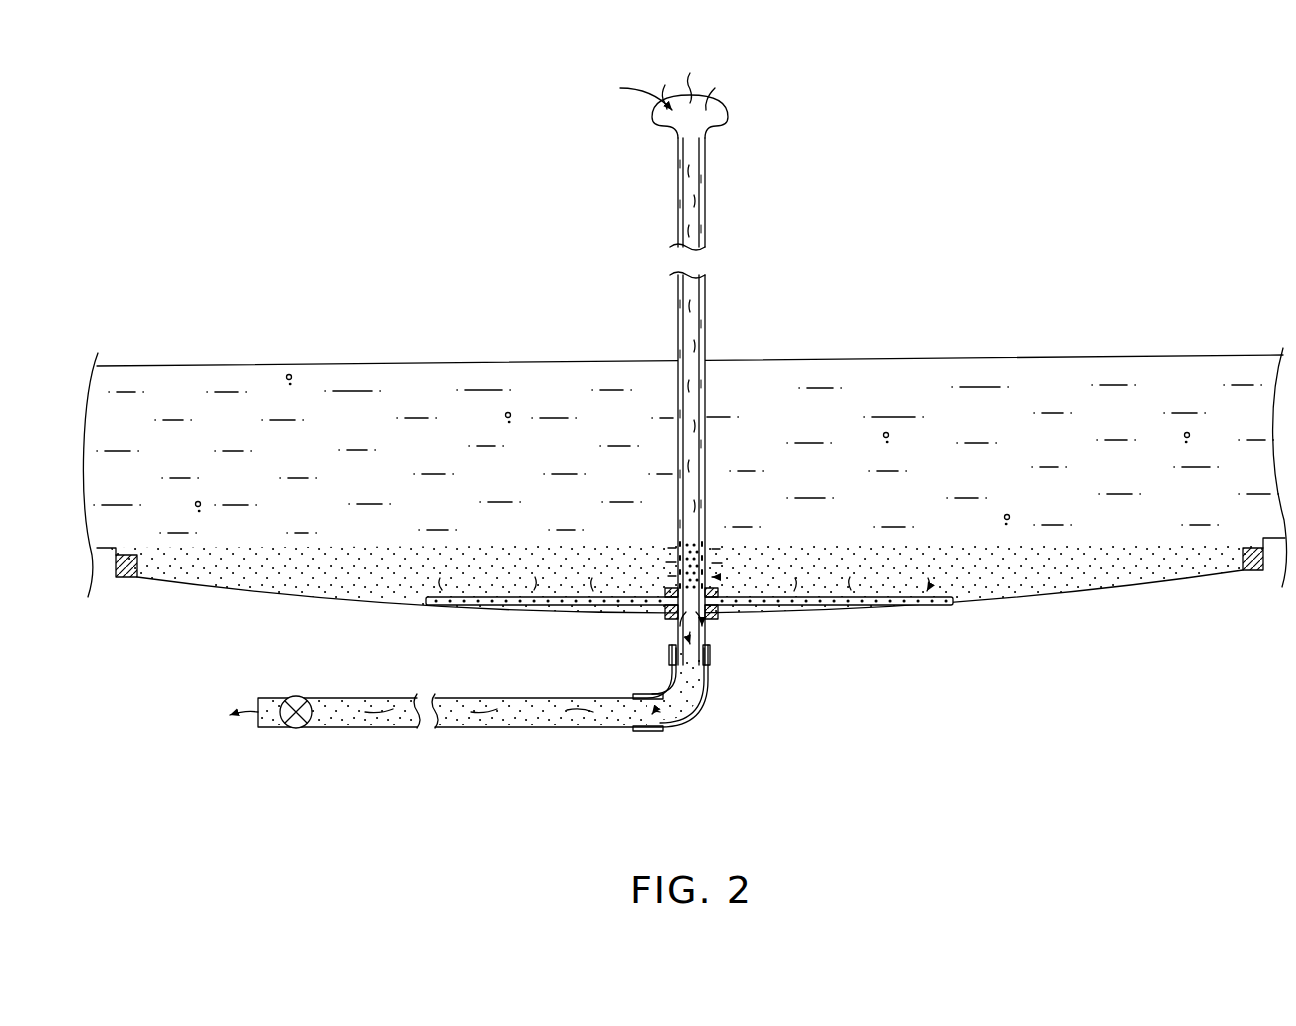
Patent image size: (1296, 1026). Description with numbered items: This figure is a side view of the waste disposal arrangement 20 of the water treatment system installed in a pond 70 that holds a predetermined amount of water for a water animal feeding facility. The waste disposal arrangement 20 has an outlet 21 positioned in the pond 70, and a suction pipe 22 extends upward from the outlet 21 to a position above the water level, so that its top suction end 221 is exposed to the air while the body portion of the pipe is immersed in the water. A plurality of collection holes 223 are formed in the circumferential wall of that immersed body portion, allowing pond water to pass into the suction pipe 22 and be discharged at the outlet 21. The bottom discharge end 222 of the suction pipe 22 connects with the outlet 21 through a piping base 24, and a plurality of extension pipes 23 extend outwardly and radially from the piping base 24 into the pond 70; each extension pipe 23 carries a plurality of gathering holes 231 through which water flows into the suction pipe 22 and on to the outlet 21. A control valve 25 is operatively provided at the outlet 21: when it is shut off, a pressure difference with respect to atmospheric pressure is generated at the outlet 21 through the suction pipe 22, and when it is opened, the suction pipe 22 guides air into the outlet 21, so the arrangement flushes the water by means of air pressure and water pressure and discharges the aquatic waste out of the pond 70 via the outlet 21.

The pond 70 is at (1047, 335).
The waste disposal arrangement 20 is at (722, 430).
The suction pipe 22 is at (677, 335).
The top suction end 221 is at (718, 82).
The collection holes 223 is at (677, 540).
The bottom discharge end 222 is at (662, 621).
The piping base 24 is at (716, 607).
The outlet 21 is at (713, 618).
The extension pipes 23 is at (442, 606).
The gathering holes 231 is at (862, 606).
The control valve 25 is at (300, 728).